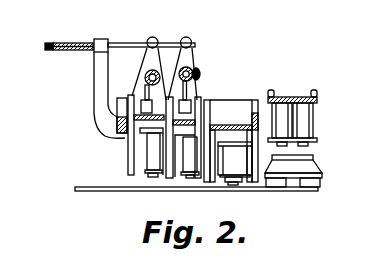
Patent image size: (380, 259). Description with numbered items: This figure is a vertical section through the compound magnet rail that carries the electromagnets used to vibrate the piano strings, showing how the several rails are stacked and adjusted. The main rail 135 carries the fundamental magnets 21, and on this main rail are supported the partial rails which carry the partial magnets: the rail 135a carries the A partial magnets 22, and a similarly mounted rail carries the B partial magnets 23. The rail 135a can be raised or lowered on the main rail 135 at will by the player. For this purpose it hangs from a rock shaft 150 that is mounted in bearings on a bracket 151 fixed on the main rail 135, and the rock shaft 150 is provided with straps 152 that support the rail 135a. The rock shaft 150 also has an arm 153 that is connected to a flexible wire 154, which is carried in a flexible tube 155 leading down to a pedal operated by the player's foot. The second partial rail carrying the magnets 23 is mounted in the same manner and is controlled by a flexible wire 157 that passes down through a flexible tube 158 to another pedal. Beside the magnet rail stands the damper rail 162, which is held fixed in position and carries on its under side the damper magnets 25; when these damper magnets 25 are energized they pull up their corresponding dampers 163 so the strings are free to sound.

The flexible tube 155 is at (48, 42).
The flexible tube 158 is at (70, 50).
The flexible wire 157 is at (136, 44).
The straps 152 is at (182, 44).
The flexible wire 154 is at (180, 46).
The arm 153 is at (198, 46).
The rock shaft 150 is at (197, 56).
The magnet rail 135a is at (193, 76).
The bracket 151 is at (199, 99).
The main rail 135 is at (117, 130).
The partial magnets 23 is at (150, 153).
The partial magnets 22 is at (190, 178).
The fundamental magnets 21 is at (231, 185).
The damper rail 162 is at (276, 96).
The damper magnets 25 is at (309, 126).
The dampers 163 is at (309, 163).